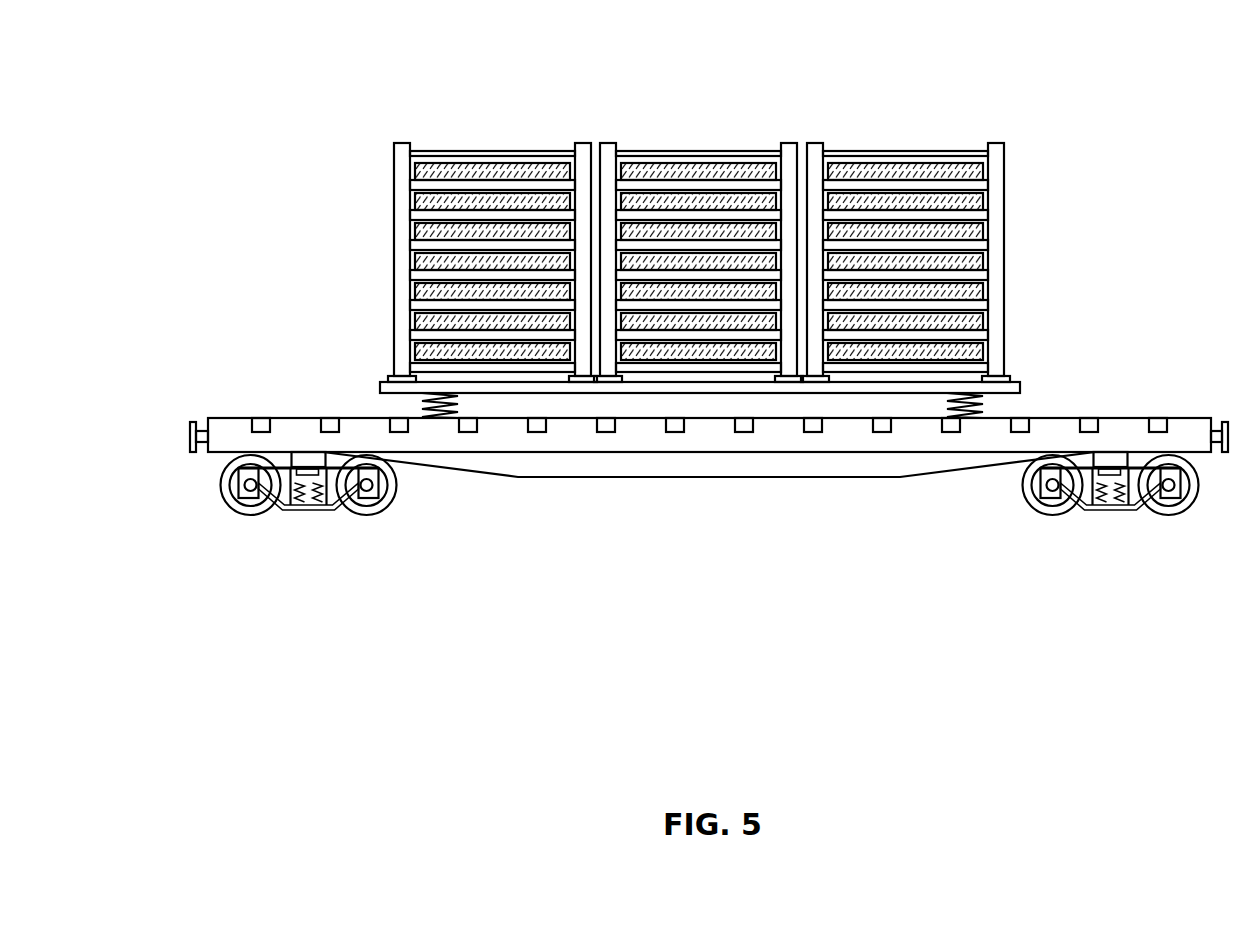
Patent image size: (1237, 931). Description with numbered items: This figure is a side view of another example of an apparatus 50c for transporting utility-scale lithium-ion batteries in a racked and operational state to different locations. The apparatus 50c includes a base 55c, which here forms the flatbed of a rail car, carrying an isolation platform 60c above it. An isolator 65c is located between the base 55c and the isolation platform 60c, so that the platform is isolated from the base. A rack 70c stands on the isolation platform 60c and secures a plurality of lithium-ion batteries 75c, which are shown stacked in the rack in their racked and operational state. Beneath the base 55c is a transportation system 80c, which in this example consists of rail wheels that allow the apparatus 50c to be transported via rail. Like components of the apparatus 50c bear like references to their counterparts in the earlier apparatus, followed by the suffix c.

The apparatus 50c is at (700, 564).
The base 55c is at (668, 438).
The isolation platform 60c is at (1020, 387).
The isolator 65c is at (422, 410).
The rack 70c is at (815, 165).
The lithium-ion batteries 75c is at (512, 172).
The transportation system 80c is at (302, 545).